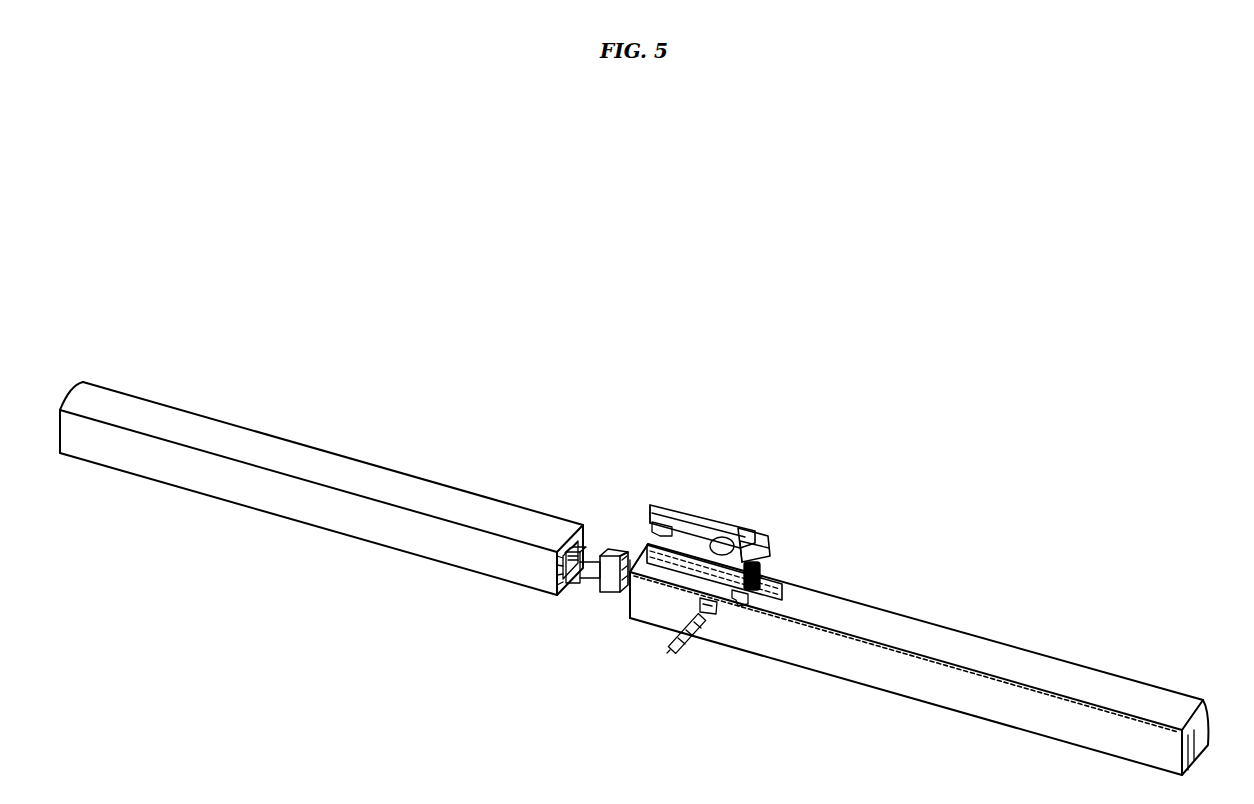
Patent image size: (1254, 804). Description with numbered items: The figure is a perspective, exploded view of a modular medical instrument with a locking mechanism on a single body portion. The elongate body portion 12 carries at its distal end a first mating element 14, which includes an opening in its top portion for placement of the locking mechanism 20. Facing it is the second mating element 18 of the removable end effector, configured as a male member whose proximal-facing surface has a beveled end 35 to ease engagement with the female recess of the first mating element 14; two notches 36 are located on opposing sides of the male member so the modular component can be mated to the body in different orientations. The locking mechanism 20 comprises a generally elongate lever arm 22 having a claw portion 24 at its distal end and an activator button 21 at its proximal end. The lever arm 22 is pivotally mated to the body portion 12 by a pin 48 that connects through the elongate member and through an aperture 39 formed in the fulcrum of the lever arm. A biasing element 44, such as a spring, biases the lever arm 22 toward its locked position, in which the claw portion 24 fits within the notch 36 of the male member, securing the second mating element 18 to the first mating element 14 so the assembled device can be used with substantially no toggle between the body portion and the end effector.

The body portion 12 is at (933, 630).
The first mating element 14 is at (627, 627).
The second mating element 18 is at (607, 537).
The locking mechanism 20 is at (703, 505).
The activator button 21 is at (756, 540).
The lever arm 22 is at (710, 523).
The claw portion 24 is at (650, 504).
The beveled end 35 is at (630, 570).
The notch 36 is at (593, 583).
The aperture 39 is at (717, 613).
The biasing element 44 is at (760, 577).
The pin 48 is at (688, 652).